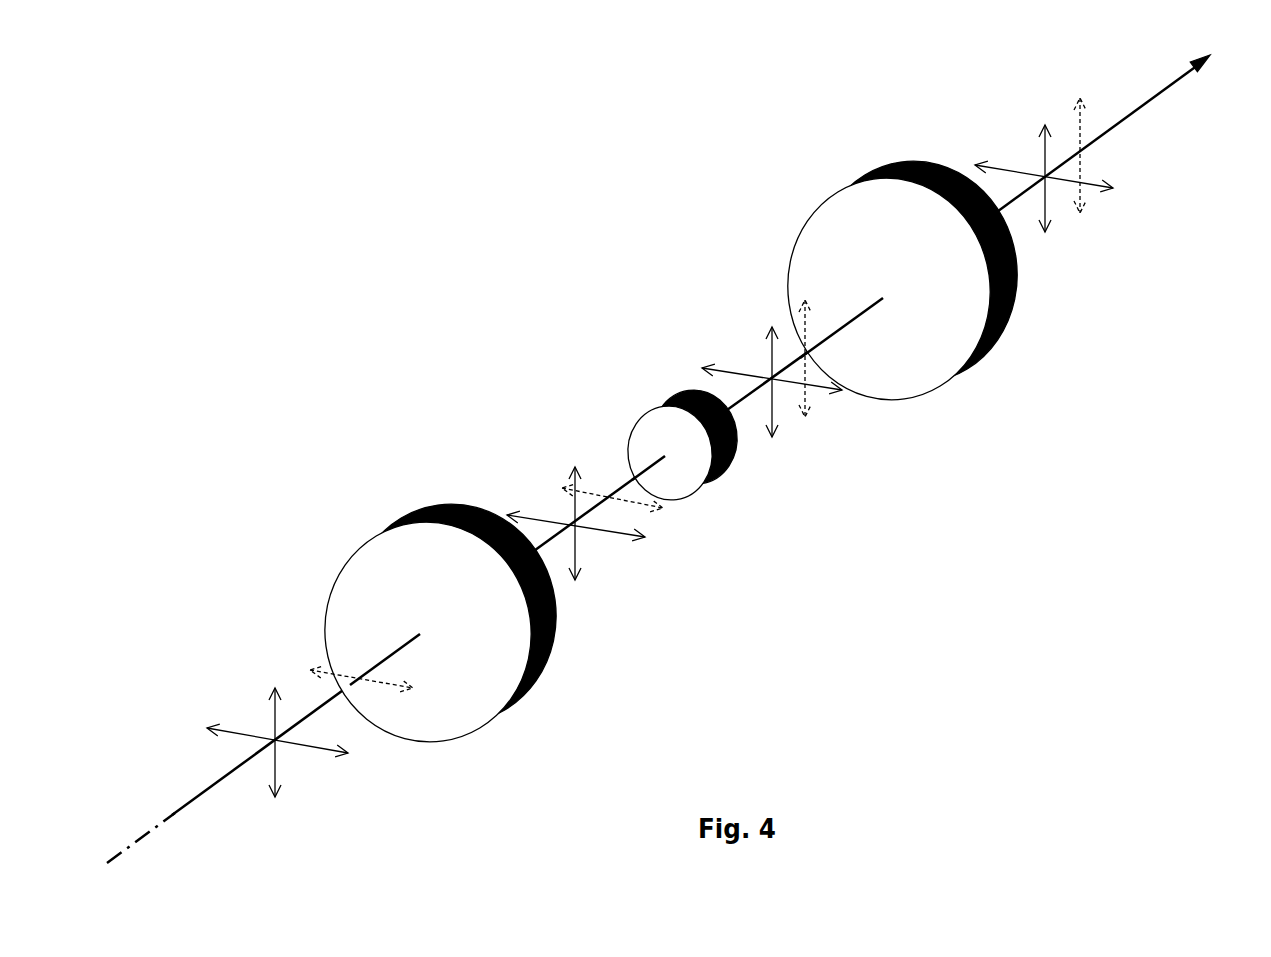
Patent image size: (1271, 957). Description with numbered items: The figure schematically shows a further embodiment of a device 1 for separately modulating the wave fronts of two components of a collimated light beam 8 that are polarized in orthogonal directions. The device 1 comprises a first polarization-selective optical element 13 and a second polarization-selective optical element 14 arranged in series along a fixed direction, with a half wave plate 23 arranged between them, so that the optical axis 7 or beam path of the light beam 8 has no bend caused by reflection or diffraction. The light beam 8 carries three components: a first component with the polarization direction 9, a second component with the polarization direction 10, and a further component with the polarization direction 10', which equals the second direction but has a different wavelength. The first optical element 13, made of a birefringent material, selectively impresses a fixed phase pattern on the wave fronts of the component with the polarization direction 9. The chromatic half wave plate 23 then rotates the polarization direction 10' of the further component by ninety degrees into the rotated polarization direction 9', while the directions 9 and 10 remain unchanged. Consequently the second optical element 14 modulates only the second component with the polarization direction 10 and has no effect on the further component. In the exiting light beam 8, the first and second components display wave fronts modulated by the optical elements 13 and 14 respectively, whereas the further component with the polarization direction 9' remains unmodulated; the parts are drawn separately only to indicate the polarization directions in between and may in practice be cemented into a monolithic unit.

The device 1 is at (697, 150).
The optical axis 7 is at (140, 832).
The light beam 8 is at (1170, 90).
The polarization direction 9 is at (682, 489).
The rotated polarization direction 9' is at (944, 225).
The polarization direction 10 is at (660, 415).
The polarization direction 10' is at (475, 549).
The first polarization-selective optical element 13 is at (385, 505).
The second polarization-selective optical element 14 is at (865, 165).
The half wave plate 23 is at (658, 390).